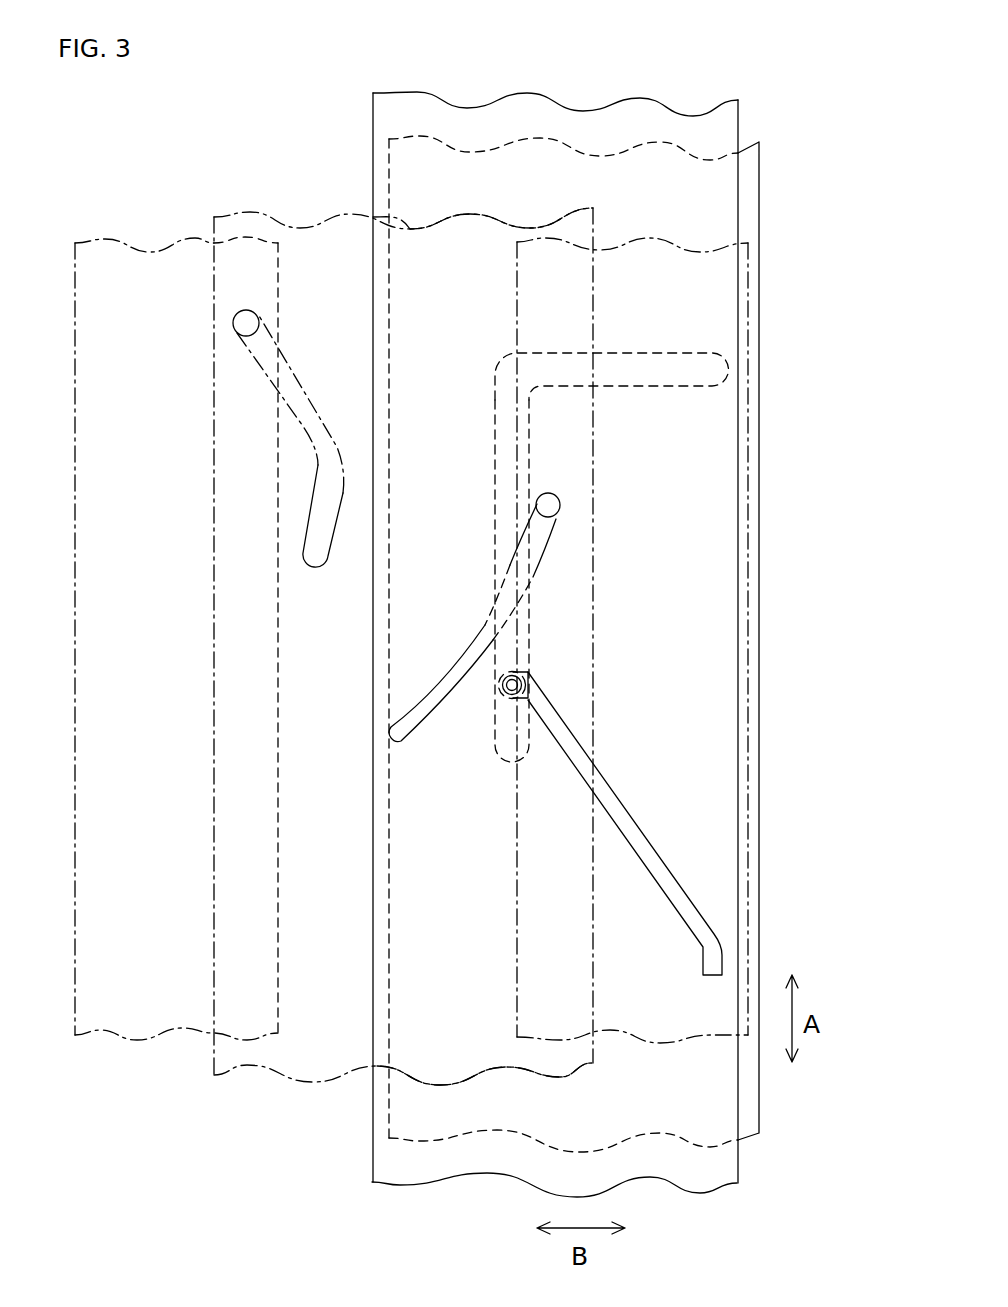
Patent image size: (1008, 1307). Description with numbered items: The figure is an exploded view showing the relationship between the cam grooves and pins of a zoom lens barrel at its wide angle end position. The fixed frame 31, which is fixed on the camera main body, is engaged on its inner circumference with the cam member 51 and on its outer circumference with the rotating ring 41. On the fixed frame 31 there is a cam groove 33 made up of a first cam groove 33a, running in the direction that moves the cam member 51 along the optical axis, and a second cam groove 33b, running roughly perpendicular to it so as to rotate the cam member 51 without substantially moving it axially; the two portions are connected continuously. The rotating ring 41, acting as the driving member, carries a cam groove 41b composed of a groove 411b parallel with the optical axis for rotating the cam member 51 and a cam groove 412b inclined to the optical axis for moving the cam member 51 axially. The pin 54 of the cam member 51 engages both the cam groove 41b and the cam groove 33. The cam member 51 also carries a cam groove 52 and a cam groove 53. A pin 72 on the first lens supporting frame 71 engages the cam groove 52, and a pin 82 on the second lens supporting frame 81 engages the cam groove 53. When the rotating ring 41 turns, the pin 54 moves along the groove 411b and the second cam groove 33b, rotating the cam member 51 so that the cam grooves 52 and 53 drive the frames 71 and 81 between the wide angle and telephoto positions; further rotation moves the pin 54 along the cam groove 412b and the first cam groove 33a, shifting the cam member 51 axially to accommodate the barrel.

The fixed frame 31 is at (420, 1140).
The cam groove 33 is at (692, 557).
The first cam groove 33a is at (653, 388).
The second cam groove 33b is at (523, 445).
The rotating ring 41 is at (372, 973).
The cam groove 41b is at (717, 823).
The groove 411b is at (530, 673).
The cam groove 412b is at (560, 730).
The cam member 51 is at (214, 1068).
The cam groove 52 is at (293, 410).
The cam groove 53 is at (460, 660).
The pin 54 is at (512, 700).
The first lens supporting frame 71 is at (75, 686).
The pin 72 is at (245, 325).
The second lens supporting frame 81 is at (515, 940).
The pin 82 is at (560, 505).